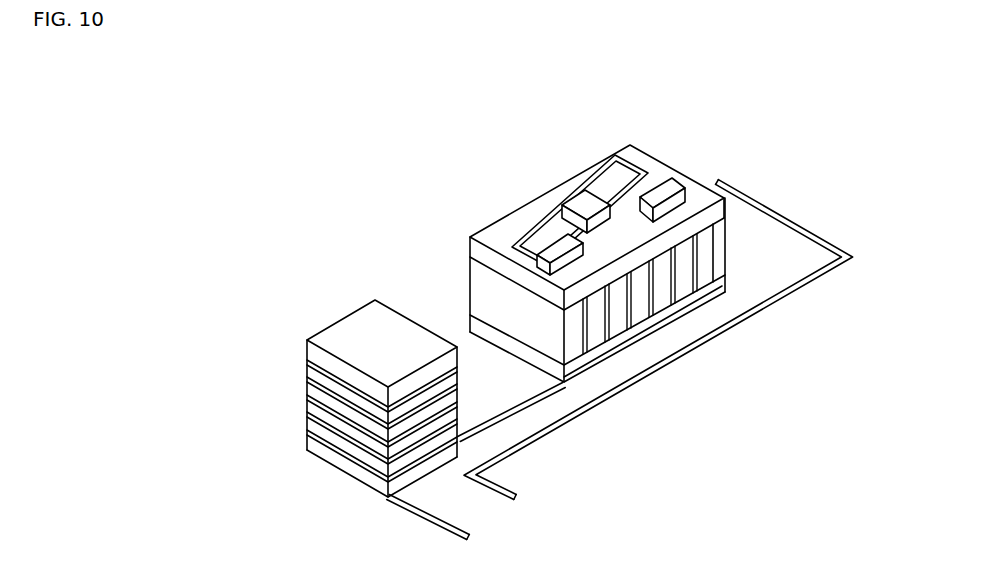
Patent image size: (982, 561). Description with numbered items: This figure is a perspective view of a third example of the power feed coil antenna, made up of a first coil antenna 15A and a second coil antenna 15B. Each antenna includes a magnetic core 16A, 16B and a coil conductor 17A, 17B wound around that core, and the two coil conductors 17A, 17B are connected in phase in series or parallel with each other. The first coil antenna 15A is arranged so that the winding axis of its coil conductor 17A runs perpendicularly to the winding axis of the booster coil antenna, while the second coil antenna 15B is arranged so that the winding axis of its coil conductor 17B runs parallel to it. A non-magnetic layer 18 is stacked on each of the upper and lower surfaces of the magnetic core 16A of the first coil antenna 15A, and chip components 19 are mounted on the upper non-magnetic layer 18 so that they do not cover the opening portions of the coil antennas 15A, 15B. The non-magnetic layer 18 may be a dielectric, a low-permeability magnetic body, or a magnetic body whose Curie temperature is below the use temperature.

The first coil antenna 15A is at (512, 205).
The second coil antenna 15B is at (333, 312).
The magnetic core 16A is at (470, 281).
The magnetic core 16B is at (347, 478).
The coil conductor 17A is at (713, 250).
The coil conductor 17B is at (308, 395).
The non-magnetic layer 18 is at (470, 246).
The chip components 19 is at (549, 250).